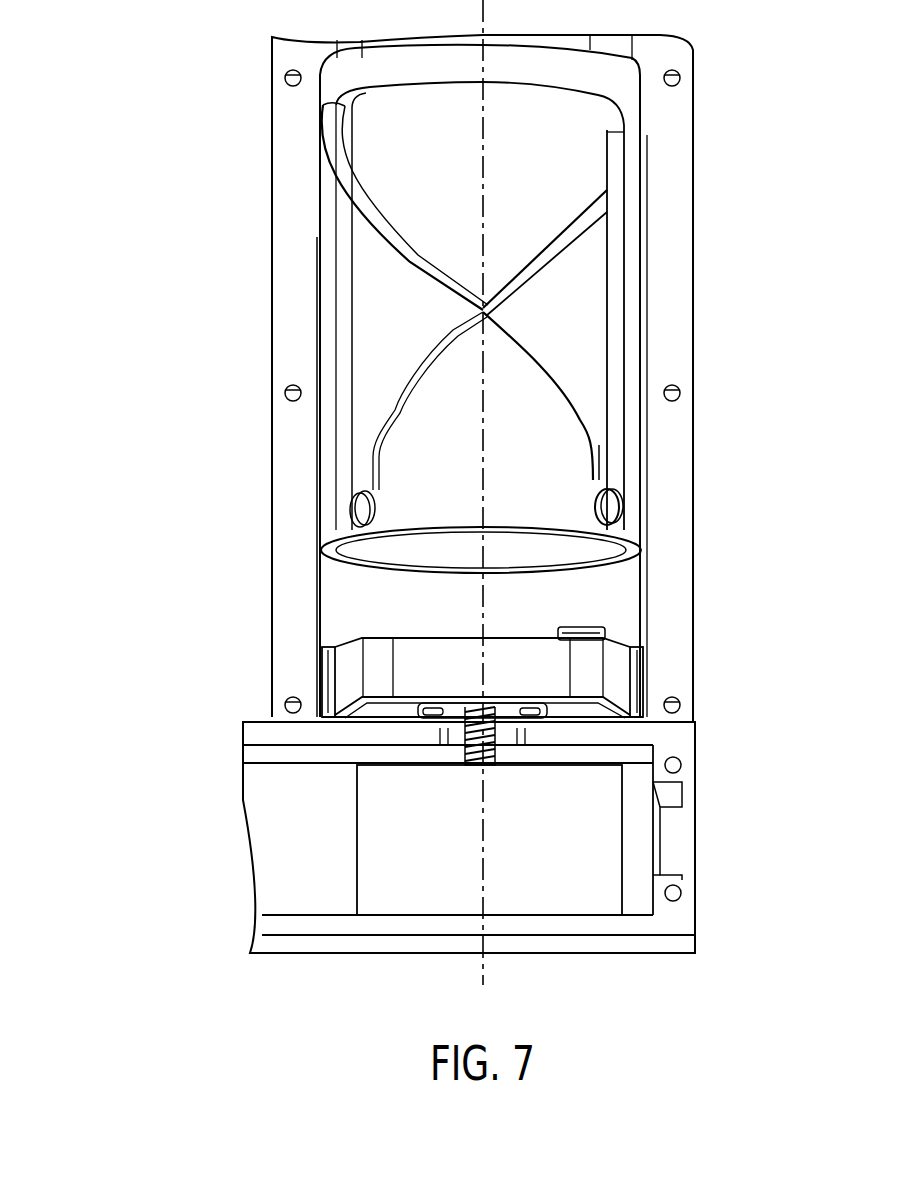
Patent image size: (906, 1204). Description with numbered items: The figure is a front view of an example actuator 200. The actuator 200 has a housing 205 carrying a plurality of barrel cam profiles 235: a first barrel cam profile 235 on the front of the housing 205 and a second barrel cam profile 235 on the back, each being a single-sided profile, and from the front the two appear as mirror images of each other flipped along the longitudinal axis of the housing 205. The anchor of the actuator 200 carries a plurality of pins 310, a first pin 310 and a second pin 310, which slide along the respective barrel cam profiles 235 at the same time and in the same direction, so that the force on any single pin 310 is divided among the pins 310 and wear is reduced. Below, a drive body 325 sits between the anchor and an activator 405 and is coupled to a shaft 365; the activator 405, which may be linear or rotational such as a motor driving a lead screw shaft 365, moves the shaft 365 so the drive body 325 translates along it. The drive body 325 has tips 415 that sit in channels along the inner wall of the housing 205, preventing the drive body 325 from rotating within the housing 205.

The actuator 200 is at (116, 92).
The housing 205 is at (297, 172).
The barrel cam profile 235 is at (430, 275).
The pin 310 is at (360, 505).
The drive body 325 is at (423, 655).
The shaft 365 is at (447, 740).
The activator 405 is at (357, 838).
The tip 415 is at (350, 678).